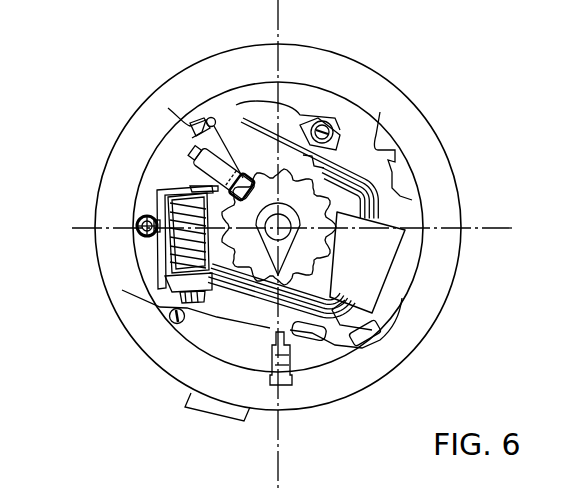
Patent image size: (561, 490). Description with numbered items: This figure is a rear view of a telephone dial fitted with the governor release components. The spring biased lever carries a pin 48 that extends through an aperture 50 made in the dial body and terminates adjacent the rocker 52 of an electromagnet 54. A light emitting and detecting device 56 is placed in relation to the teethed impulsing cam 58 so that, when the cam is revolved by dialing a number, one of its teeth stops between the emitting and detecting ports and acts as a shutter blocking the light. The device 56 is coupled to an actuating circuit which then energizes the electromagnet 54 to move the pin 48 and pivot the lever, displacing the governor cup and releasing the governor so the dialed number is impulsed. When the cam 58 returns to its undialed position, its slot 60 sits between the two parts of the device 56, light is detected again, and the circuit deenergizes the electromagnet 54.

The pin 48 is at (138, 218).
The aperture 50 is at (135, 236).
The rocker 52 is at (157, 200).
The electromagnet 54 is at (172, 252).
The light emitting and detecting device 56 is at (198, 155).
The teethed impulsing cam 58 is at (322, 210).
The slot 60 is at (208, 119).